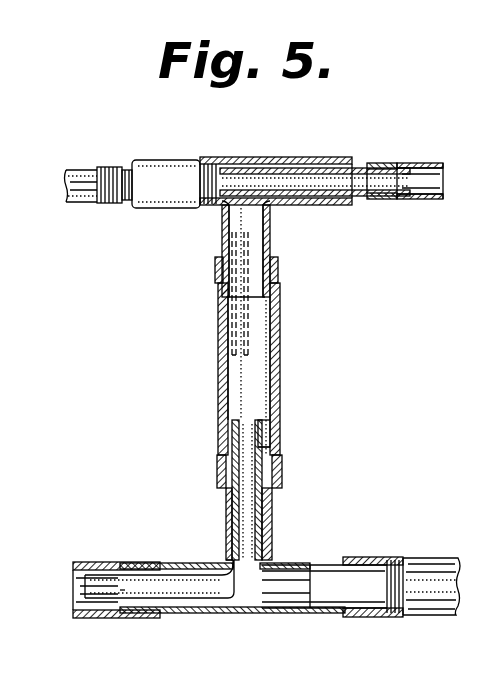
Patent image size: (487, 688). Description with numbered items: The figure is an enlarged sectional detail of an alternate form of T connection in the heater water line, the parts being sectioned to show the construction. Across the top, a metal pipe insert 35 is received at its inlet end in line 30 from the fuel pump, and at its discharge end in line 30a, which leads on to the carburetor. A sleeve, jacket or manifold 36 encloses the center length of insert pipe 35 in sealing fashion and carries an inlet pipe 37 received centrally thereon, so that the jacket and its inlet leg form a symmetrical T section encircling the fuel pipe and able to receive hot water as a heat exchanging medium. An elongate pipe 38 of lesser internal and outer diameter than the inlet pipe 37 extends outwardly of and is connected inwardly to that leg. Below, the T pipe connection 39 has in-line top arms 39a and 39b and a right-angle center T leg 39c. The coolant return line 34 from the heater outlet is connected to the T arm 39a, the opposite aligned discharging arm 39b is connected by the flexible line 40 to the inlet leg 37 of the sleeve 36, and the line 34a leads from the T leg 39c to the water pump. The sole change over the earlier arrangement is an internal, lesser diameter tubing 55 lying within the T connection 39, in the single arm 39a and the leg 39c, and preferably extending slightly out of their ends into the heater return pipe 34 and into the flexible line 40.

The line 30 is at (420, 164).
The line 30a is at (74, 170).
The line 34 is at (108, 564).
The line 34a is at (422, 558).
The metal pipe insert 35 is at (354, 168).
The sleeve, jacket or manifold 36 is at (226, 160).
The inlet pipe 37 is at (270, 222).
The elongate pipe 38 is at (250, 330).
The T pipe connection 39 is at (244, 652).
The T top arm 39a is at (193, 614).
The T top arm 39b is at (333, 612).
The T leg 39c is at (273, 512).
The flexible line 40 is at (218, 362).
The tubing 55 is at (272, 434).